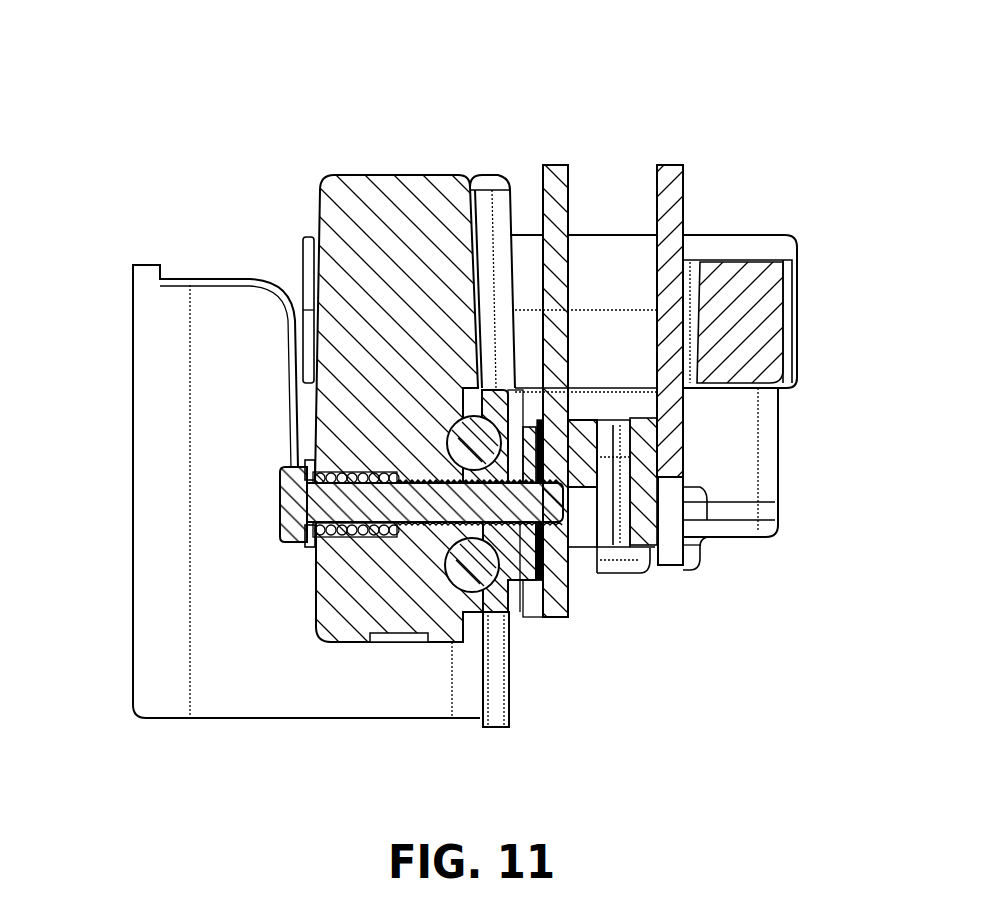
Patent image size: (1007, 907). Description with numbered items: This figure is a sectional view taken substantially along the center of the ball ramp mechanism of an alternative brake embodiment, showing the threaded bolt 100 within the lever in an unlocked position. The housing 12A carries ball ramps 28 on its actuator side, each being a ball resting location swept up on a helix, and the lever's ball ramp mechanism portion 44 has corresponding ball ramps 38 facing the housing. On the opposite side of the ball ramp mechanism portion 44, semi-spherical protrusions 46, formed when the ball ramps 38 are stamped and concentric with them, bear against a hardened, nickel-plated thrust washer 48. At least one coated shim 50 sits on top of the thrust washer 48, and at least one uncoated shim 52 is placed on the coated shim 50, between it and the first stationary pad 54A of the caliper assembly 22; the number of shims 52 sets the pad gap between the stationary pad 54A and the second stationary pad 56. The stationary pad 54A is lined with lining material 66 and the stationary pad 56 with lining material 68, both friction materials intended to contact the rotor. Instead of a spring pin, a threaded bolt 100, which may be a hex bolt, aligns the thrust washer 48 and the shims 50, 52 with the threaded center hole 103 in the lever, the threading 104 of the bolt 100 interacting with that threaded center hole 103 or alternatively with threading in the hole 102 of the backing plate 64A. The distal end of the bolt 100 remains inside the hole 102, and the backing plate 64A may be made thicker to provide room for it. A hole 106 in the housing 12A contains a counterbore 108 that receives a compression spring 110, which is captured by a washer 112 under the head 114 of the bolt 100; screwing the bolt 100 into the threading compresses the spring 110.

The housing 12A is at (404, 168).
The caliper assembly 22 is at (748, 216).
The ball ramps 28 is at (476, 642).
The ball ramps 38 is at (455, 425).
The ball ramp mechanism portion 44 is at (477, 578).
The semi-spherical protrusions 46 is at (505, 578).
The thrust washer 48 is at (527, 594).
The coated shim 50 is at (540, 594).
The uncoated shim 52 is at (556, 585).
The stationary pad 54A is at (562, 158).
The stationary pad 56 is at (671, 160).
The backing plate 64A is at (557, 613).
The lining material 66 is at (587, 417).
The lining material 68 is at (648, 462).
The threaded bolt 100 is at (406, 542).
The hole 102 is at (545, 487).
The threaded center hole 103 is at (539, 483).
The threading 104 is at (563, 550).
The hole 106 is at (432, 468).
The counterbore 108 is at (307, 478).
The compression spring 110 is at (313, 548).
The washer 112 is at (307, 547).
The head 114 is at (280, 508).